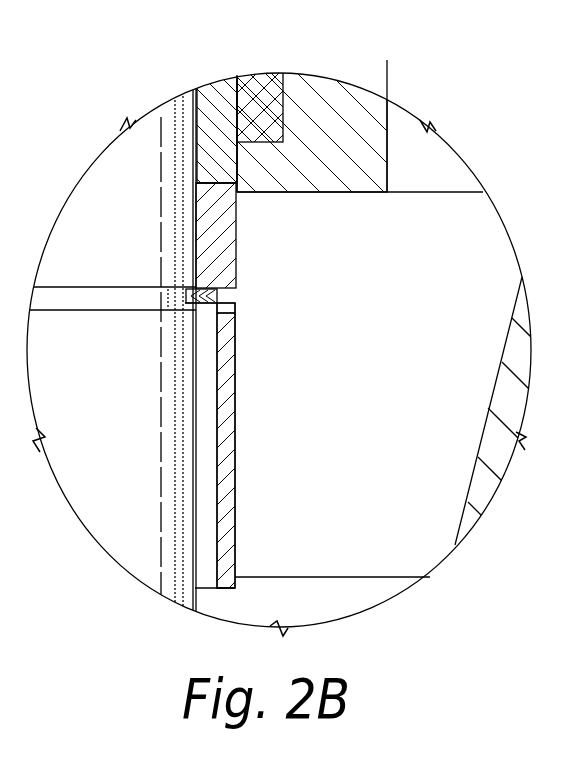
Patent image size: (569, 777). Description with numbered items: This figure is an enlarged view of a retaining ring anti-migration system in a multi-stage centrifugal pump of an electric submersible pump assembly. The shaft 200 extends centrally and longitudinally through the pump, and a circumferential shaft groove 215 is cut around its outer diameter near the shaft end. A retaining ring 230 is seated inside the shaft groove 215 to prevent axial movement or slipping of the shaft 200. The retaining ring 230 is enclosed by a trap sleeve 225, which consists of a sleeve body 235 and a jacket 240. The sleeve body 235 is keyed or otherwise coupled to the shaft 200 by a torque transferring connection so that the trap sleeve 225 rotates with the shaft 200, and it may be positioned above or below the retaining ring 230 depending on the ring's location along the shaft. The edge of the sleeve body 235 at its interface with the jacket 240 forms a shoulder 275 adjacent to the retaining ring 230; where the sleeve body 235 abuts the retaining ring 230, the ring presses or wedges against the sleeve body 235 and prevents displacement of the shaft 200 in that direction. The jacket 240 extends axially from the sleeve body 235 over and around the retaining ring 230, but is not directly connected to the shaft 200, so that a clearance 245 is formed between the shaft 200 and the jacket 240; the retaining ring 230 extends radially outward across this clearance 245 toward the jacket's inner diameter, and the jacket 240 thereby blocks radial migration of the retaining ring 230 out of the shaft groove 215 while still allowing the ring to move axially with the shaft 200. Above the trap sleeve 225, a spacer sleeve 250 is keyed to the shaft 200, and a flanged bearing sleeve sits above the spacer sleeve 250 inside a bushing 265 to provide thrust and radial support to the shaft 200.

The shaft 200 is at (83, 250).
The shaft groove 215 is at (105, 297).
The trap sleeve 225 is at (239, 360).
The retaining ring 230 is at (206, 312).
The sleeve body 235 is at (212, 236).
The jacket 240 is at (226, 477).
The clearance 245 is at (143, 403).
The spacer sleeve 250 is at (216, 100).
The bushing 265 is at (266, 93).
The shoulder 275 is at (205, 292).